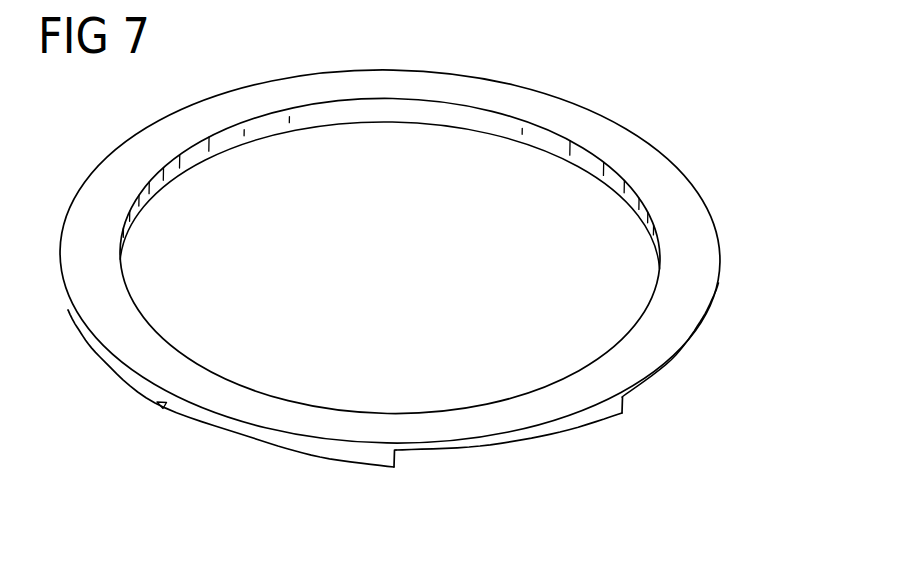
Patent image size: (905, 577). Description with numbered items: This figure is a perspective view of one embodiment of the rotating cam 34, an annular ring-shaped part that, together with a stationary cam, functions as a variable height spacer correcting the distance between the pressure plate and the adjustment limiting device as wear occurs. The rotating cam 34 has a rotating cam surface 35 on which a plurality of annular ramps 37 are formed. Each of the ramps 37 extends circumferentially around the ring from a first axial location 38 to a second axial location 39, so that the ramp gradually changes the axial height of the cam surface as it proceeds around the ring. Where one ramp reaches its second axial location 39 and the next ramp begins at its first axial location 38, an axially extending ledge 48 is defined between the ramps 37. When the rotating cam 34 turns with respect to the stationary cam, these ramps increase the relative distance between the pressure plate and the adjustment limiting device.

The rotating cam 34 is at (648, 98).
The rotating cam surface 35 is at (165, 408).
The annular ramps 37 is at (545, 438).
The first axial location 38 is at (396, 450).
The second axial location 39 is at (623, 413).
The axially extending ledge 48 is at (623, 398).